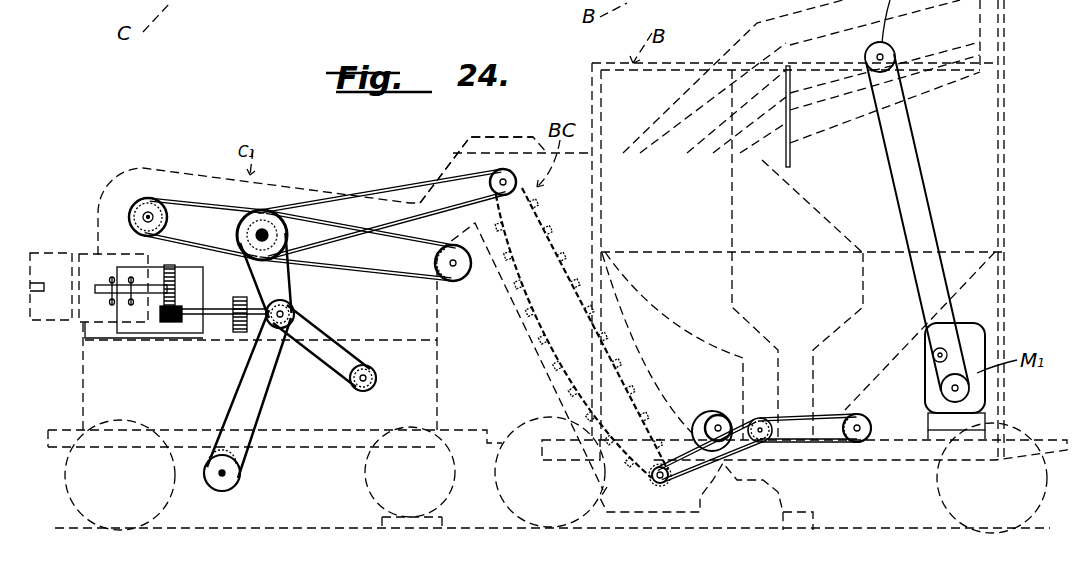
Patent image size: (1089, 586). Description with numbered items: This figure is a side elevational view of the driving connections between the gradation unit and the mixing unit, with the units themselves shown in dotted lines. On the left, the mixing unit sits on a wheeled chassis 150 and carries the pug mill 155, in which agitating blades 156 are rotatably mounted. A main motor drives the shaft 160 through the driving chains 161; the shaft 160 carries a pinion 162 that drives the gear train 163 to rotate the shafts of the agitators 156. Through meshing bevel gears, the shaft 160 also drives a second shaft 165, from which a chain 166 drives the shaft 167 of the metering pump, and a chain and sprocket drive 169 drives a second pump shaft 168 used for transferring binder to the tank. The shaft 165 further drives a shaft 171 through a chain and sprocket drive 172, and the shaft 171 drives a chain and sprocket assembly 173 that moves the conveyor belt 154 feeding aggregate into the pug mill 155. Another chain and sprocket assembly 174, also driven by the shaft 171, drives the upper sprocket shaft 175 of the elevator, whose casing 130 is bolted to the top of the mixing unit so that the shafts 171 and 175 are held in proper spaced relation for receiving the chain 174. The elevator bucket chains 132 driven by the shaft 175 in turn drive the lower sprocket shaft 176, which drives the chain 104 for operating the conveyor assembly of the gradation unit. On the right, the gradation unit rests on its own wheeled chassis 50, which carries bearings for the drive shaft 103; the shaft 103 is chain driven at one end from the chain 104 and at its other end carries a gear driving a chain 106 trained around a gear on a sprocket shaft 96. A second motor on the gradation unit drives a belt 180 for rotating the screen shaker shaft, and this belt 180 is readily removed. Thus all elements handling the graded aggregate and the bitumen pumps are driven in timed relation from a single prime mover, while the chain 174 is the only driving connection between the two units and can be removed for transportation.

The wheeled chassis 50 is at (902, 458).
The sprocket shaft 96 is at (718, 426).
The drive shaft 103 is at (775, 420).
The chain 104 is at (740, 447).
The chain 106 is at (730, 410).
The casing 130 is at (440, 170).
The bucket chains 132 is at (541, 339).
The wheeled chassis 150 is at (66, 423).
The conveyor belt 154 is at (382, 272).
The pug mill 155 is at (38, 253).
The agitating blades 156 is at (113, 282).
The shaft 160 is at (213, 318).
The driving chains 161 is at (239, 334).
The pinion 162 is at (173, 324).
The gear train 163 is at (175, 281).
The second shaft 165 is at (296, 309).
The chain 166 is at (270, 400).
The pump shaft 167 is at (225, 473).
The second pump shaft 168 is at (366, 379).
The chain and sprocket drive 169 is at (353, 350).
The shaft 171 is at (268, 228).
The chain and sprocket drive 172 is at (290, 282).
The chain and sprocket assembly 173 is at (208, 218).
The chain and sprocket assembly 174 is at (382, 193).
The upper sprocket shaft 175 is at (503, 182).
The lower sprocket shaft 176 is at (657, 480).
The belt 180 is at (925, 190).